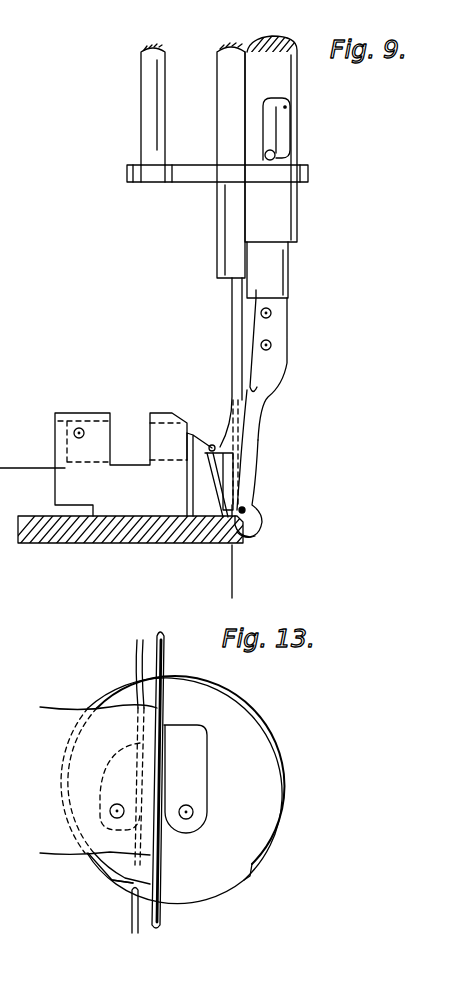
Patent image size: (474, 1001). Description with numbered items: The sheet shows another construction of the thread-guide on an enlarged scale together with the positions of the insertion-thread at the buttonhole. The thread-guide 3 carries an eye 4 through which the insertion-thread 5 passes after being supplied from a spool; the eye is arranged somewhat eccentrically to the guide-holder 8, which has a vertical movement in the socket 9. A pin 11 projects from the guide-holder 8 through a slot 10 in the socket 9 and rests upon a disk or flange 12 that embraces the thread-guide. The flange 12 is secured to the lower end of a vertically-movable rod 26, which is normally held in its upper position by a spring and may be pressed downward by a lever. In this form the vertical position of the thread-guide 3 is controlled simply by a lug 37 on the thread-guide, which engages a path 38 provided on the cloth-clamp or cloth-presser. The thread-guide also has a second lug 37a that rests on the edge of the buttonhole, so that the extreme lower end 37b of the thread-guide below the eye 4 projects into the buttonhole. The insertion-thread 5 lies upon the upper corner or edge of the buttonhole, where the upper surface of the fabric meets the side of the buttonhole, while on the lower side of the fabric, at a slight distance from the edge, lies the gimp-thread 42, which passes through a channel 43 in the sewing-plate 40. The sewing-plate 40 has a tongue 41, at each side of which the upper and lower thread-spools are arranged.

In FIG. 9, the thread-guide 3 is at (262, 375).
In FIG. 9, the eye 4 is at (245, 510).
In FIG. 9, the insertion-thread 5 is at (251, 426).
In FIG. 13, the insertion-thread 5 is at (166, 687).
In FIG. 9, the guide-holder 8 is at (275, 277).
In FIG. 9, the socket 9 is at (283, 212).
In FIG. 9, the slot 10 is at (272, 121).
In FIG. 9, the pin 11 is at (275, 155).
In FIG. 9, the flange 12 is at (300, 173).
In FIG. 9, the vertically-movable rod 26 is at (150, 92).
In FIG. 9, the lug 37 is at (211, 445).
In FIG. 9, the second lug 37a is at (225, 509).
In FIG. 9, the extreme lower end 37b is at (252, 528).
In FIG. 9, the path 38 is at (213, 460).
In FIG. 13, the sewing-plate 40 is at (273, 757).
In FIG. 13, the tongue 41 is at (164, 794).
In FIG. 13, the gimp-thread 42 is at (133, 926).
In FIG. 13, the channel 43 is at (137, 885).